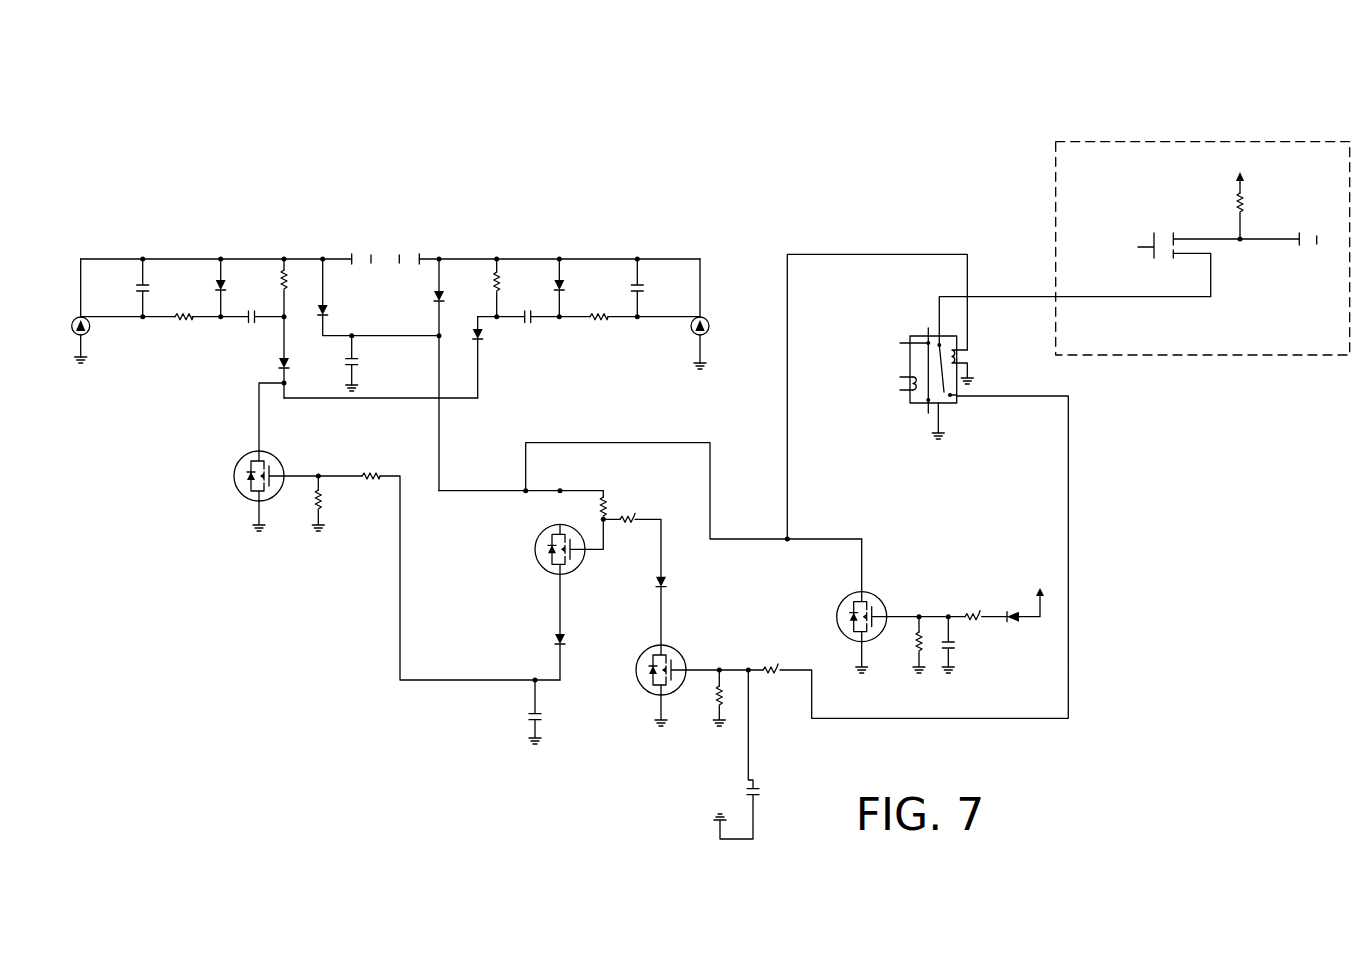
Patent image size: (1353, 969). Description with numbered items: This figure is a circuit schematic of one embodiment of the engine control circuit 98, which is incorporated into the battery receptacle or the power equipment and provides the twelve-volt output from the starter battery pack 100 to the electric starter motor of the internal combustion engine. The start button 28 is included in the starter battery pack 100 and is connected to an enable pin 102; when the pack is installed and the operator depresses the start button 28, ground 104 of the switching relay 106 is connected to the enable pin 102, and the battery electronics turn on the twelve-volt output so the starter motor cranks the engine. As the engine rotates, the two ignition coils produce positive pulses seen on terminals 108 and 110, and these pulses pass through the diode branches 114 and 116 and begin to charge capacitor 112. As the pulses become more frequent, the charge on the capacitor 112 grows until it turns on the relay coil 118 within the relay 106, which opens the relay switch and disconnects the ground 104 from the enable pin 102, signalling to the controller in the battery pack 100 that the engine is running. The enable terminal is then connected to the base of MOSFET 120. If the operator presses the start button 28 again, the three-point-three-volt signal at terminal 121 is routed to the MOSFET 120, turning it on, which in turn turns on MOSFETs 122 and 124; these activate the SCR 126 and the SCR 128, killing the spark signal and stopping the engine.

The start button 28 is at (1155, 226).
The engine control circuit 98 is at (792, 228).
The starter battery pack 100 is at (1077, 141).
The enable pin 102 is at (1306, 250).
The ground 104 is at (943, 418).
The switching relay 106 is at (910, 365).
The terminal 108 is at (352, 245).
The terminal 110 is at (419, 245).
The capacitor 112 is at (359, 361).
The diode 114 is at (221, 246).
The diode 116 is at (573, 246).
The relay coil 118 is at (951, 349).
The MOSFET 120 is at (684, 660).
The terminal 121 is at (1246, 192).
The MOSFET 122 is at (543, 540).
The MOSFET 124 is at (242, 460).
The SCR 126 is at (708, 320).
The SCR 128 is at (89, 333).